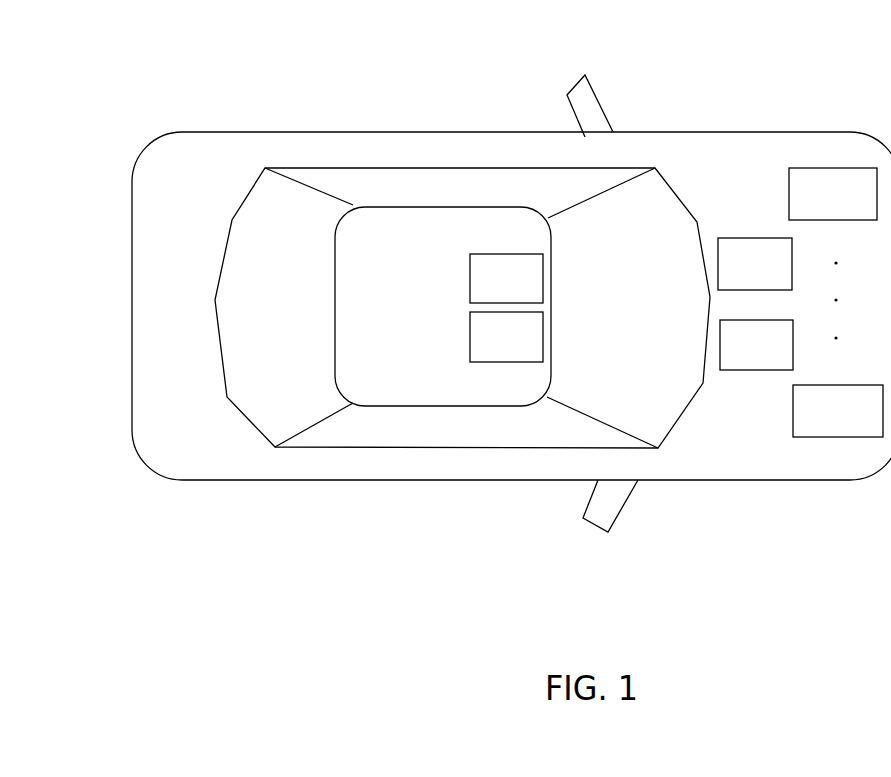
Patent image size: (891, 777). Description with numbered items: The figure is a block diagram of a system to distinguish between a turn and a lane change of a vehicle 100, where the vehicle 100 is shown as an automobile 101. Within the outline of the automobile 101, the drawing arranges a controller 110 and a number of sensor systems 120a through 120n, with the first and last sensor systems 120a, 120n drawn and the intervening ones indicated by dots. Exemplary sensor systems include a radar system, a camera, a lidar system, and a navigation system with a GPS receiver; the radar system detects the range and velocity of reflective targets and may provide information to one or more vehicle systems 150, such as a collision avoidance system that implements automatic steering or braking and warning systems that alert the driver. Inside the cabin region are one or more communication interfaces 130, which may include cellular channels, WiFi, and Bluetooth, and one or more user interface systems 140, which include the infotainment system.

The vehicle 100 is at (190, 137).
The automobile 101 is at (462, 308).
The controller 110 is at (732, 281).
The sensor system 120a is at (803, 209).
The sensor system 120n is at (808, 421).
The communication interface 130 is at (484, 294).
The user interface system 140 is at (484, 352).
The vehicle system 150 is at (733, 361).